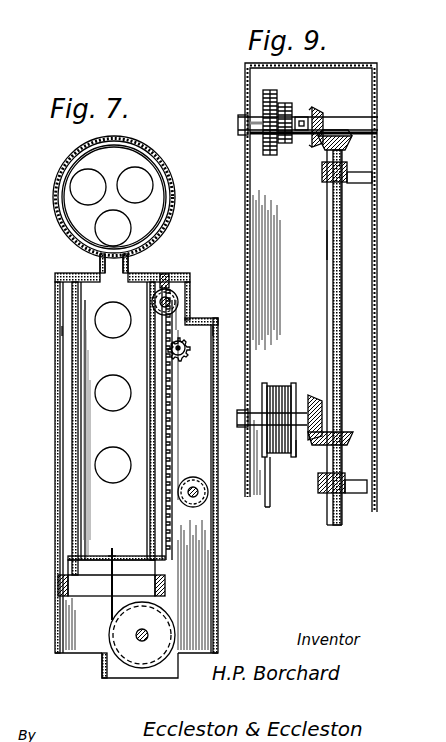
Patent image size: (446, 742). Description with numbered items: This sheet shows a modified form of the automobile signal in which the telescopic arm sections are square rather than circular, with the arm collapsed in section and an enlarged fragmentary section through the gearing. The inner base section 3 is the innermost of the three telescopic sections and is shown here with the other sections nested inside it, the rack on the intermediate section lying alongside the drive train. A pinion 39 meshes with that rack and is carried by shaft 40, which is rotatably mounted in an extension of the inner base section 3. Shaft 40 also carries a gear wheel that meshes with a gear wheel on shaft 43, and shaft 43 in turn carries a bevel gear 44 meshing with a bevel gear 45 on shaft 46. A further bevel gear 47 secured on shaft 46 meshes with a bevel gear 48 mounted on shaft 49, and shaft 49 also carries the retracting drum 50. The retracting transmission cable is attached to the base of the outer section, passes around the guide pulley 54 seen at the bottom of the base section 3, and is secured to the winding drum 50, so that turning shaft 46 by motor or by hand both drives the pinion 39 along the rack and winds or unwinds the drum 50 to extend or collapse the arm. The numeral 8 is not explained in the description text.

In FIG. 7, the inner base section 3 is at (62, 562).
In FIG. 7, the frame plate 8 is at (62, 331).
In FIG. 7, the pinion 39 is at (172, 349).
In FIG. 9, the pinion 39 is at (266, 140).
In FIG. 7, the guide pulley 54 is at (142, 660).
In FIG. 9, the shaft 40 is at (343, 118).
In FIG. 9, the shaft 43 is at (303, 138).
In FIG. 9, the bevel gear 44 is at (315, 110).
In FIG. 9, the bevel gear 45 is at (326, 150).
In FIG. 9, the shaft 46 is at (330, 240).
In FIG. 9, the bevel gear 47 is at (263, 104).
In FIG. 9, the bevel gear 48 is at (316, 398).
In FIG. 9, the shaft 49 is at (266, 392).
In FIG. 9, the retracting drum 50 is at (292, 452).